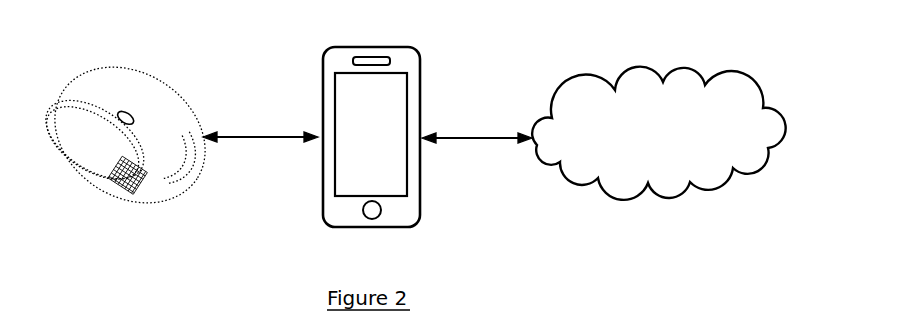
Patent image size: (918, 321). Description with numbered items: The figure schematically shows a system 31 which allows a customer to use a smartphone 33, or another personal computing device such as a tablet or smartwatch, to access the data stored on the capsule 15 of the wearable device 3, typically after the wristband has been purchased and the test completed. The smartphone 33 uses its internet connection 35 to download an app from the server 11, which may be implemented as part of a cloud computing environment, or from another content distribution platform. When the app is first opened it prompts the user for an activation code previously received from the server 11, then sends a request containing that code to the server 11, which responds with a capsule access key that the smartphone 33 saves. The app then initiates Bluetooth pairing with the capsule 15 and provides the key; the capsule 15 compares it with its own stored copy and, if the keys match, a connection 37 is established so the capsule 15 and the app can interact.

The wearable device 3 is at (94, 210).
The capsule 15 is at (86, 113).
The connection 37 is at (261, 134).
The smartphone 33 is at (321, 203).
The internet connection 35 is at (479, 136).
The server 11 is at (680, 197).
The system 31 is at (558, 239).